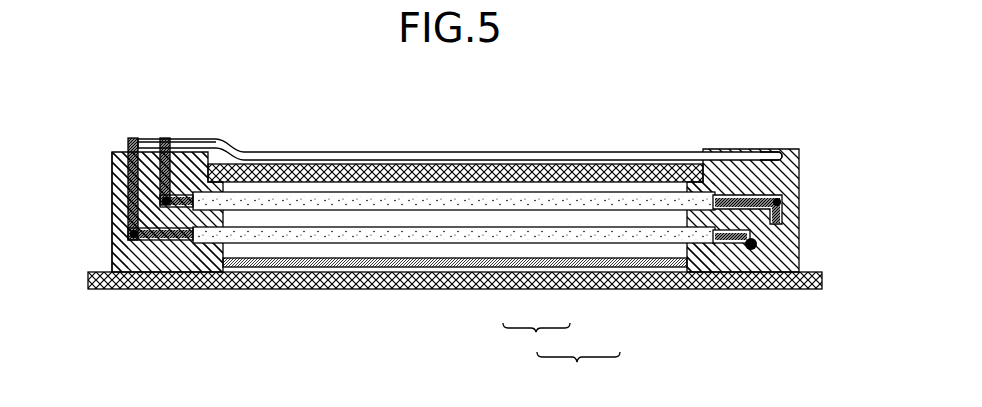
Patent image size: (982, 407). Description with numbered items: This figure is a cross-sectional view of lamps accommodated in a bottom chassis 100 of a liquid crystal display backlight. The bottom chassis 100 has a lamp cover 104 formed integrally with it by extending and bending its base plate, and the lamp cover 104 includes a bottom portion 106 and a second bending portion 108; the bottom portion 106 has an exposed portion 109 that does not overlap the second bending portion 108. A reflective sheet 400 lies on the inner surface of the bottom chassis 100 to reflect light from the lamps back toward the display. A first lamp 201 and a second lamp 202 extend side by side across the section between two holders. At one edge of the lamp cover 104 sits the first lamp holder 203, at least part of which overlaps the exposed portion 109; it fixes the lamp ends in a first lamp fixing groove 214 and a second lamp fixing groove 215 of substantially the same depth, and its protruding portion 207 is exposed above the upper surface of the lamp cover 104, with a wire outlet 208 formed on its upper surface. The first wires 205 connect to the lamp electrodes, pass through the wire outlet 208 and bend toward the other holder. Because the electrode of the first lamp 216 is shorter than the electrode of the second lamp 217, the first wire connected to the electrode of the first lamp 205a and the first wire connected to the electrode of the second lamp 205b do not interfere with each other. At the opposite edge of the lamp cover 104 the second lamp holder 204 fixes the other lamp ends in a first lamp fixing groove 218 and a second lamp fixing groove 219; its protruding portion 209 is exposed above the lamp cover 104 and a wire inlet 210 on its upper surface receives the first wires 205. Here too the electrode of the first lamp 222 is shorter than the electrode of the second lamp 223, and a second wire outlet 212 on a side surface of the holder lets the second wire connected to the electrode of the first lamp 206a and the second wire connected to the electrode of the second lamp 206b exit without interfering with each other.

The bottom chassis 100 is at (578, 365).
The lamp cover 104 is at (536, 337).
The bottom portion 106 is at (575, 290).
The second bending portion 108 is at (507, 183).
The exposed portion 109 is at (678, 290).
The first lamp 201 is at (285, 200).
The second lamp 202 is at (350, 235).
The first lamp holder 203 is at (150, 272).
The second lamp holder 204 is at (795, 289).
The first wires 205 is at (405, 163).
The first wire connected to the electrode of the first lamp 205a is at (165, 140).
The first wire connected to the electrode of the second lamp 205b is at (128, 173).
The second wire connected to the electrode of the first lamp 206a is at (783, 215).
The second wire connected to the electrode of the second lamp 206b is at (749, 243).
The protruding portion 207 is at (216, 139).
The wire outlet 208 is at (140, 140).
The protruding portion 209 is at (792, 160).
The wire inlet 210 is at (763, 150).
The second wire outlet 212 is at (757, 246).
The first lamp fixing groove 214 is at (200, 157).
The second lamp fixing groove 215 is at (208, 270).
The electrode of the first lamp 216 is at (185, 157).
The electrode of the second lamp 217 is at (124, 272).
The first lamp fixing groove 218 is at (702, 160).
The second lamp fixing groove 219 is at (720, 272).
The electrode of the first lamp 222 is at (766, 193).
The electrode of the second lamp 223 is at (752, 236).
The reflective sheet 400 is at (420, 262).